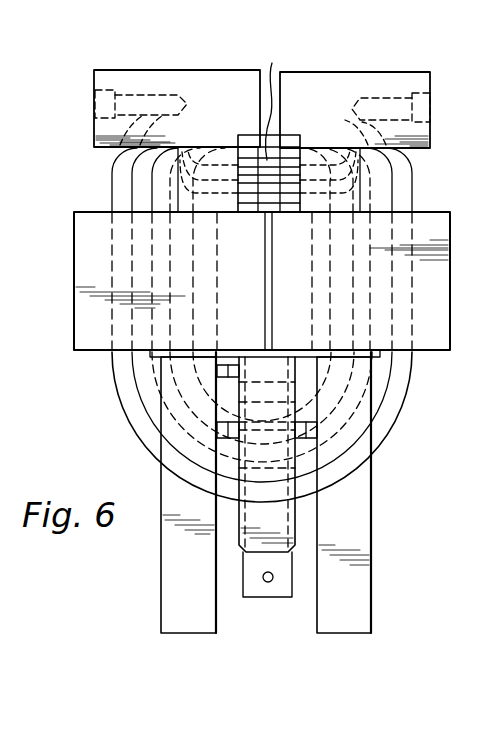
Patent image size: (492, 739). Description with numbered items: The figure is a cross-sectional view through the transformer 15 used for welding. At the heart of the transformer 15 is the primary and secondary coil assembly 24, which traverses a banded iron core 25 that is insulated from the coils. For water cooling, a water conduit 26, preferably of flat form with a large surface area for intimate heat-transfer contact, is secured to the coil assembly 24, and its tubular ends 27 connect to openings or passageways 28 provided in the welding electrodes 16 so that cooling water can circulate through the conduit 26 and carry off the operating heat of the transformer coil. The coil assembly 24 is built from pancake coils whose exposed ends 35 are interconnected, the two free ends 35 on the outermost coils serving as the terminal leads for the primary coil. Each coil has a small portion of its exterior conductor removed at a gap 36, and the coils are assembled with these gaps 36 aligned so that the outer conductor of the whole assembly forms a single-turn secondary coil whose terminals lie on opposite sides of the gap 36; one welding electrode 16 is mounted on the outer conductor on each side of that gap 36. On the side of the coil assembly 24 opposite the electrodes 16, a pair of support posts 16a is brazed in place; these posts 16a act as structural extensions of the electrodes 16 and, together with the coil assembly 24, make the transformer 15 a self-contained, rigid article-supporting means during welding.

The transformer 15 is at (455, 298).
The welding electrodes 16 is at (218, 78).
The support posts 16a is at (173, 598).
The primary and secondary coil assembly 24 is at (378, 375).
The banded iron core 25 is at (88, 259).
The water conduit 26 is at (132, 402).
The ends of the conduit 27 is at (150, 126).
The passageways 28 is at (96, 104).
The ends of the coil 35 is at (230, 440).
The gap 36 is at (269, 126).